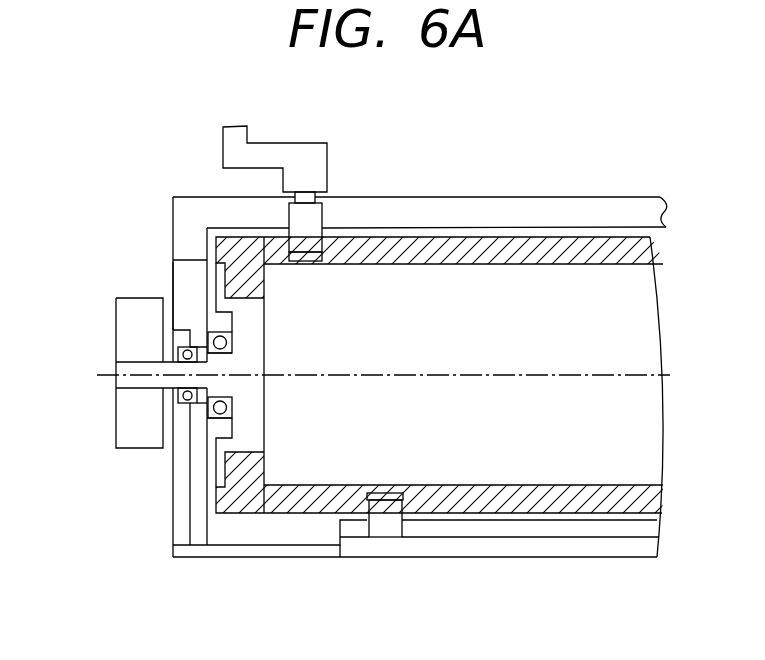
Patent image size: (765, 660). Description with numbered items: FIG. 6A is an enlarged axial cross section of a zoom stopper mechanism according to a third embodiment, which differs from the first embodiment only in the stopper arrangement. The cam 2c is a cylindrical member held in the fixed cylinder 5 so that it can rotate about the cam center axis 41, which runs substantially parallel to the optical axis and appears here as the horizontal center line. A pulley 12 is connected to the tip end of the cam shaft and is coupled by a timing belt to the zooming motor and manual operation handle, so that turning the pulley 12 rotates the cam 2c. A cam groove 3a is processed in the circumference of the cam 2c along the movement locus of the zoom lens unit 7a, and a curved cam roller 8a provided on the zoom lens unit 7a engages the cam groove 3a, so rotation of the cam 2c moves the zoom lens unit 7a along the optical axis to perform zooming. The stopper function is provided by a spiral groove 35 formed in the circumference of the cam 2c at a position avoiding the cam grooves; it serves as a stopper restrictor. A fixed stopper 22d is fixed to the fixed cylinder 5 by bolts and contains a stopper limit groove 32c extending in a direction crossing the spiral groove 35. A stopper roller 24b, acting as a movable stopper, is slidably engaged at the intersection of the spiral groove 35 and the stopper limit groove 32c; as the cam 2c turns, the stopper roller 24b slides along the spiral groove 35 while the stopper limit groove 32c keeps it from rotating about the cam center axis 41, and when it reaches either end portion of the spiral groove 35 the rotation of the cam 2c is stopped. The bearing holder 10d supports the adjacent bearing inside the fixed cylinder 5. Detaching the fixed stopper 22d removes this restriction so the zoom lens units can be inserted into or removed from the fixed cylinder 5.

The cam 2c is at (553, 247).
The cam groove 3a is at (288, 253).
The fixed cylinder 5 is at (182, 277).
The zoom lens unit 7a is at (296, 160).
The curved cam roller 8a is at (313, 217).
The bearing holder 10d is at (244, 442).
The pulley 12 is at (128, 335).
The fixed stopper 22d is at (477, 543).
The stopper roller 24b is at (387, 518).
The stopper limit groove 32c is at (585, 528).
The spiral groove 35 is at (385, 493).
The cam center axis 41 is at (113, 375).